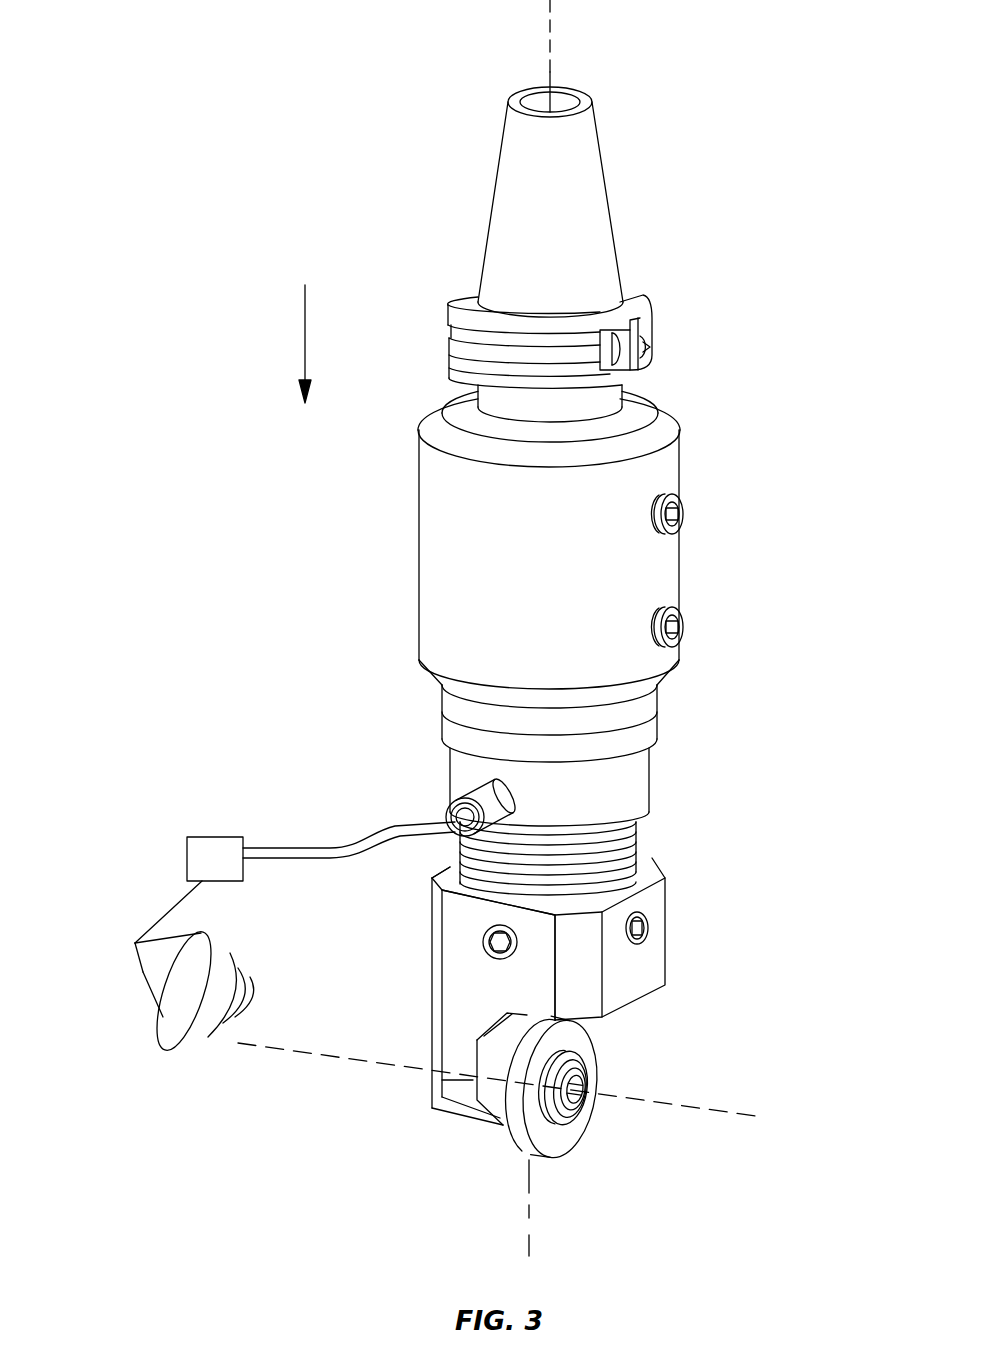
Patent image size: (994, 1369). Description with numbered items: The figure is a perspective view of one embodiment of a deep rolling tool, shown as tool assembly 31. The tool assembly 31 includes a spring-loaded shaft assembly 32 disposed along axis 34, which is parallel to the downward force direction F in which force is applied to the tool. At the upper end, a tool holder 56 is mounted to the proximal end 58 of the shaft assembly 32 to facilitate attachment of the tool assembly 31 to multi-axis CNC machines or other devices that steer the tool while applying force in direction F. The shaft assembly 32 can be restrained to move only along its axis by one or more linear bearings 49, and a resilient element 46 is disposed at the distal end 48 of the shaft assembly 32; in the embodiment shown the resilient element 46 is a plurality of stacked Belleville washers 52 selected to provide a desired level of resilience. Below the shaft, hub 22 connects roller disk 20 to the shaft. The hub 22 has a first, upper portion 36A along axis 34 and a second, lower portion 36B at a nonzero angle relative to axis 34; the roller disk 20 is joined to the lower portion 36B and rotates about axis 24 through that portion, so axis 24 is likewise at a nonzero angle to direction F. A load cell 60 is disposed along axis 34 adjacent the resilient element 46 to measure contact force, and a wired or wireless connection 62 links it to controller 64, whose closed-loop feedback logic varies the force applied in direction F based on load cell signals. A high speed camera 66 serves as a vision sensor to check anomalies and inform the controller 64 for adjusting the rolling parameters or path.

The roller disk 20 is at (547, 1098).
The hub 22 is at (672, 905).
The axis 24 is at (752, 1117).
The tool assembly 31 is at (675, 270).
The spring-loaded shaft assembly 32 is at (600, 577).
The axis 34 is at (550, 4).
The first/upper portion 36A is at (458, 942).
The second/lower portion 36B is at (462, 1047).
The resilient element 46 is at (648, 842).
The distal end 48 is at (655, 729).
The linear bearings 49 is at (622, 765).
The stacked Belleville washers 52 is at (445, 865).
The tool holder 56 is at (672, 357).
The proximal end 58 is at (710, 313).
The load cell 60 is at (473, 775).
The wired and/or wireless connection 62 is at (412, 822).
The controller/monitor 64 is at (185, 858).
The high speed camera 66 is at (148, 983).
The downward force direction F is at (305, 352).